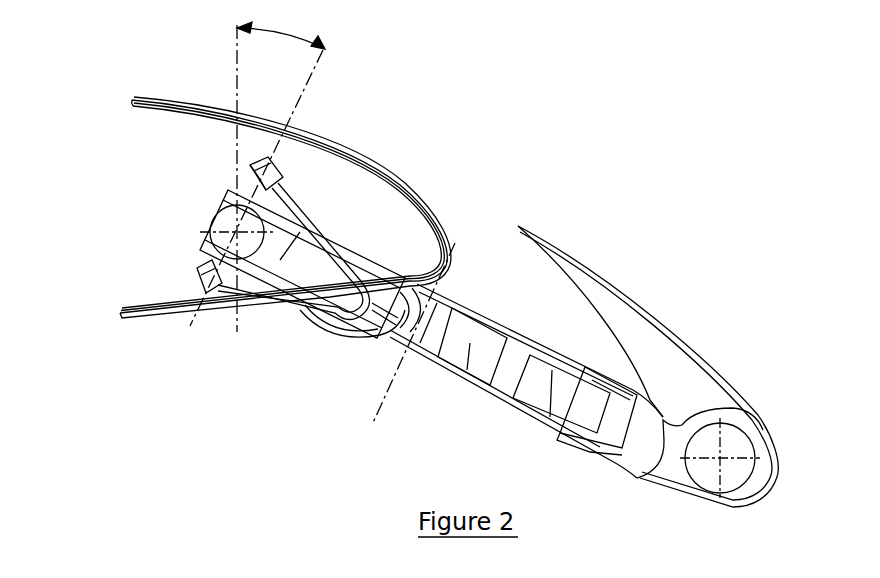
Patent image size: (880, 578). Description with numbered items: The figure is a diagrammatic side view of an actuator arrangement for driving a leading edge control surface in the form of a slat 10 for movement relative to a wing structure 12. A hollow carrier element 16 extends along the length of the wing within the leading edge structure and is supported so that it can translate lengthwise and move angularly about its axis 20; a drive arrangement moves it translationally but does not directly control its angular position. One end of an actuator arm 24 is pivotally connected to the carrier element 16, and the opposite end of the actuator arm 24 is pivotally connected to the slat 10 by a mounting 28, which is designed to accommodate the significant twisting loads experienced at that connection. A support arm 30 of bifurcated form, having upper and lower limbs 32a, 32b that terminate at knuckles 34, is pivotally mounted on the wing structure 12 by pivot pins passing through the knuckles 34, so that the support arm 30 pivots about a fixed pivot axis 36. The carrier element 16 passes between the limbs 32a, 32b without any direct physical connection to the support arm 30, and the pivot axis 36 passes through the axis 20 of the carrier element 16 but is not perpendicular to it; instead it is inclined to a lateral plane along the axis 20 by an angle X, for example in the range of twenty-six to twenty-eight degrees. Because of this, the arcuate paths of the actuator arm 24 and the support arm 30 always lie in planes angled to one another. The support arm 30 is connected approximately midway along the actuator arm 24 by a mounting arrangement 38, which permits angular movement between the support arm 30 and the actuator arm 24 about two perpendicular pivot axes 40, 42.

The slat 10 is at (678, 353).
The wing structure 12 is at (333, 172).
The carrier element 16 is at (203, 205).
The axis 20 is at (231, 229).
The actuator arm 24 is at (523, 345).
The mounting 28 is at (628, 463).
The support arm 30 is at (311, 342).
The upper limb 32a is at (350, 258).
The lower limb 32b is at (268, 303).
The knuckles 34 is at (244, 166).
The pivot axis 36 is at (308, 94).
The mounting arrangement 38 is at (390, 357).
The pivot axis 40 is at (460, 242).
The pivot axis 42 is at (470, 341).